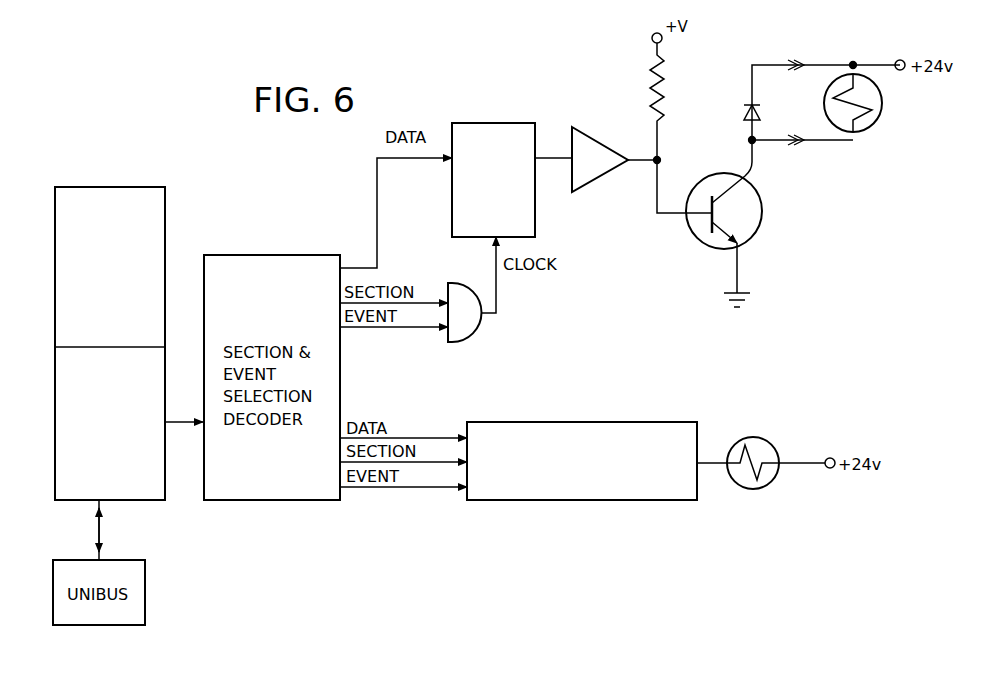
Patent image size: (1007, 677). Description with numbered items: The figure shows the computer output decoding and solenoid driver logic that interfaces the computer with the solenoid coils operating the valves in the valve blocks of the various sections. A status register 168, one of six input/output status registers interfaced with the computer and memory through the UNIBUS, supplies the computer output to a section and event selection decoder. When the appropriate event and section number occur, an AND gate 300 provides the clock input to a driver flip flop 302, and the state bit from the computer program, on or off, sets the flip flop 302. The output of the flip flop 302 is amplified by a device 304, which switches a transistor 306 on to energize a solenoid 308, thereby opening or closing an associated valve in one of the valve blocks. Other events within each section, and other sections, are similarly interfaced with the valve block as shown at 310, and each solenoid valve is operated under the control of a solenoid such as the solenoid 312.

The status register 168 is at (165, 271).
The AND gate 300 is at (468, 338).
The driver flip flop 302 is at (487, 123).
The amplifier 304 is at (594, 178).
The transistor 306 is at (786, 207).
The solenoid 308 is at (879, 122).
The other sections and events interface 310 is at (613, 422).
The solenoid 312 is at (748, 441).